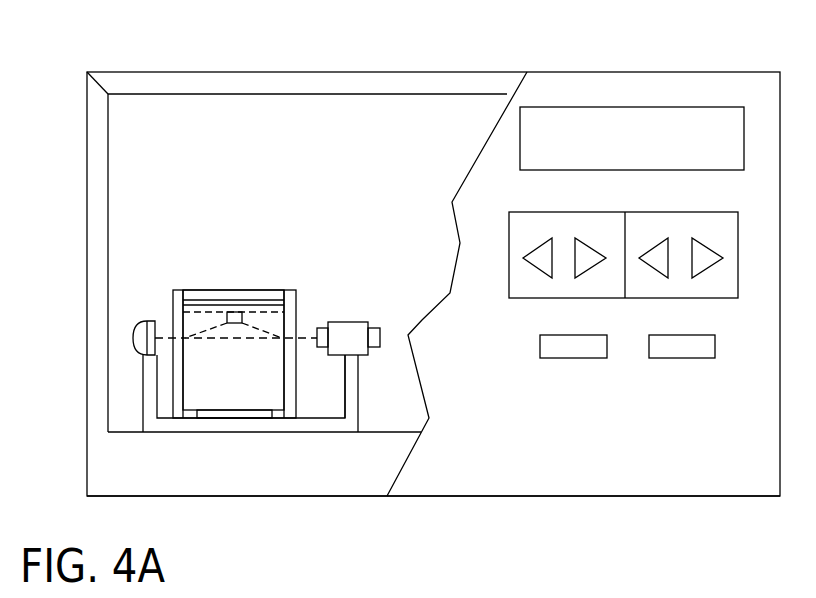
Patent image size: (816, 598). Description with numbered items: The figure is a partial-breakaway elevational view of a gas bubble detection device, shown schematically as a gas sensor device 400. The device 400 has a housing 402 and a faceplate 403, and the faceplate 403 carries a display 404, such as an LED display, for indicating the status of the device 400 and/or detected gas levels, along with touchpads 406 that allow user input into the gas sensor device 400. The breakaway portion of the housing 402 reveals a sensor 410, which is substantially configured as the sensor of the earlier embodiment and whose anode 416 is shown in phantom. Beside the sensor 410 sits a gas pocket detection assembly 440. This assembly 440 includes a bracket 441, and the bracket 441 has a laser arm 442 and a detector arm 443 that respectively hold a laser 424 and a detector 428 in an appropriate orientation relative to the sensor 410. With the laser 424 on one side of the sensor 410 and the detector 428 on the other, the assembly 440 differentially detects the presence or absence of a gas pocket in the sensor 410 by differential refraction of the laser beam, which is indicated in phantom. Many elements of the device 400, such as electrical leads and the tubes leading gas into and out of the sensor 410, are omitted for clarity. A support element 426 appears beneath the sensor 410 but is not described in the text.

The gas sensor device 400 is at (557, 70).
The housing 402 is at (148, 70).
The faceplate 403 is at (675, 482).
The display 404 is at (630, 115).
The touchpads 406 is at (688, 222).
The sensor 410 is at (175, 302).
The anode 416 is at (200, 322).
The laser 424 is at (322, 328).
The support plate 426 is at (258, 340).
The detector 428 is at (138, 345).
The gas pocket detection assembly 440 is at (369, 410).
The bracket 441 is at (198, 433).
The laser arm 442 is at (351, 410).
The detector arm 443 is at (143, 388).